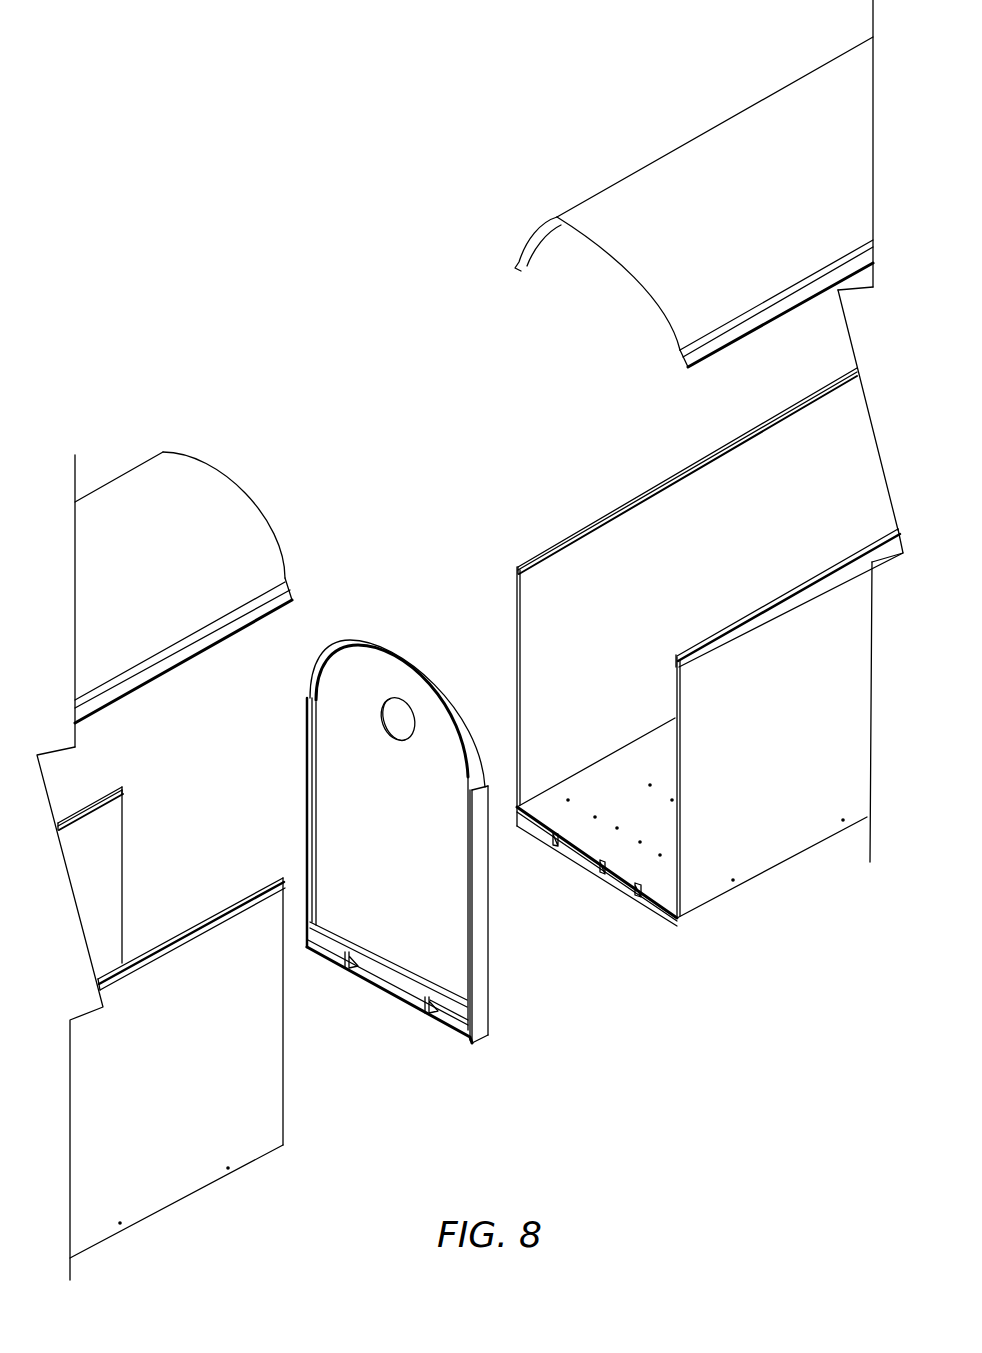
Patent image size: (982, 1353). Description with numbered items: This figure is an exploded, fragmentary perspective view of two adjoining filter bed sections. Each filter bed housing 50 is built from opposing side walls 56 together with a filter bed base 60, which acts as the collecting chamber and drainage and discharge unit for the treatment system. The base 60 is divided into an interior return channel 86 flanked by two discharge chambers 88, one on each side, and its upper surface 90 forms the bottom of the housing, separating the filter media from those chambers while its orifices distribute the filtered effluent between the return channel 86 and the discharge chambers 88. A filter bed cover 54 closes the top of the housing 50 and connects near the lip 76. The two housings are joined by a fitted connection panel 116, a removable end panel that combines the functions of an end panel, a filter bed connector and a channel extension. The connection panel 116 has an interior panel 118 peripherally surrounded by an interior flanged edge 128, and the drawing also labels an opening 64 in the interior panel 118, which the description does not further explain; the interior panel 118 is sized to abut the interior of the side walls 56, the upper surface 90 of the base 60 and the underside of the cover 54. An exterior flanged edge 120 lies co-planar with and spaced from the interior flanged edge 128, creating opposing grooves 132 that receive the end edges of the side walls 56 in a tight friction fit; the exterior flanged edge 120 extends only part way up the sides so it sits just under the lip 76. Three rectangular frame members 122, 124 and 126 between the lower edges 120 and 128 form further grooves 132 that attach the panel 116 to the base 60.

The filter bed housing 50 is at (633, 473).
The filter bed cover 54 is at (698, 157).
The side walls 56 is at (742, 810).
The filter bed base 60 is at (592, 888).
The aperture 64 is at (400, 718).
The lip 76 is at (803, 590).
The interior return channel 86 is at (577, 853).
The discharge chambers 88 is at (665, 903).
The upper surface 90 is at (618, 773).
The fitted connection panel 116 is at (507, 1010).
The interior panel 118 is at (350, 667).
The exterior flanged edge 120 is at (480, 957).
The frame member 122 is at (342, 960).
The frame member 124 is at (402, 987).
The frame member 126 is at (457, 1022).
The interior flanged edge 128 is at (397, 650).
The grooves 132 is at (481, 760).